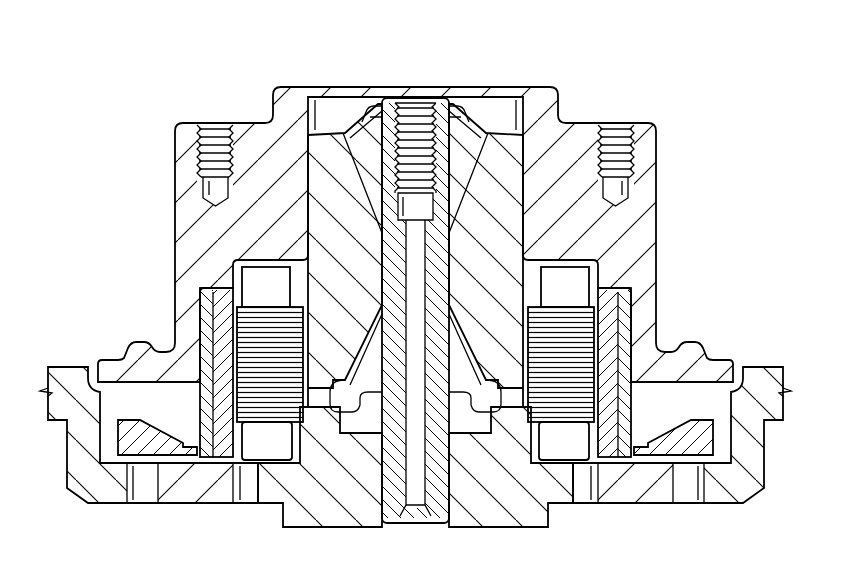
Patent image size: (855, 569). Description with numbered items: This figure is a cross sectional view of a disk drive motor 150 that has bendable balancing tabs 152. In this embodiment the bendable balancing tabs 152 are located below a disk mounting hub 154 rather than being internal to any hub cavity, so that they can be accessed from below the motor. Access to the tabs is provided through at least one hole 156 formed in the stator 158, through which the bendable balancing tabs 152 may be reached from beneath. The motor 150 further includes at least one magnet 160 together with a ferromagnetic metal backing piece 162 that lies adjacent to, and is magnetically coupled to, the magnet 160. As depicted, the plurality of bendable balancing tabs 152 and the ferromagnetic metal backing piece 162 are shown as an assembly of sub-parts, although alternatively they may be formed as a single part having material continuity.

The disk drive motor 150 is at (147, 106).
The bendable balancing tabs 152 is at (163, 432).
The disk mounting hub 154 is at (578, 122).
The hole 156 is at (147, 492).
The stator 158 is at (351, 492).
The magnet 160 is at (608, 305).
The ferromagnetic metal backing piece 162 is at (633, 413).